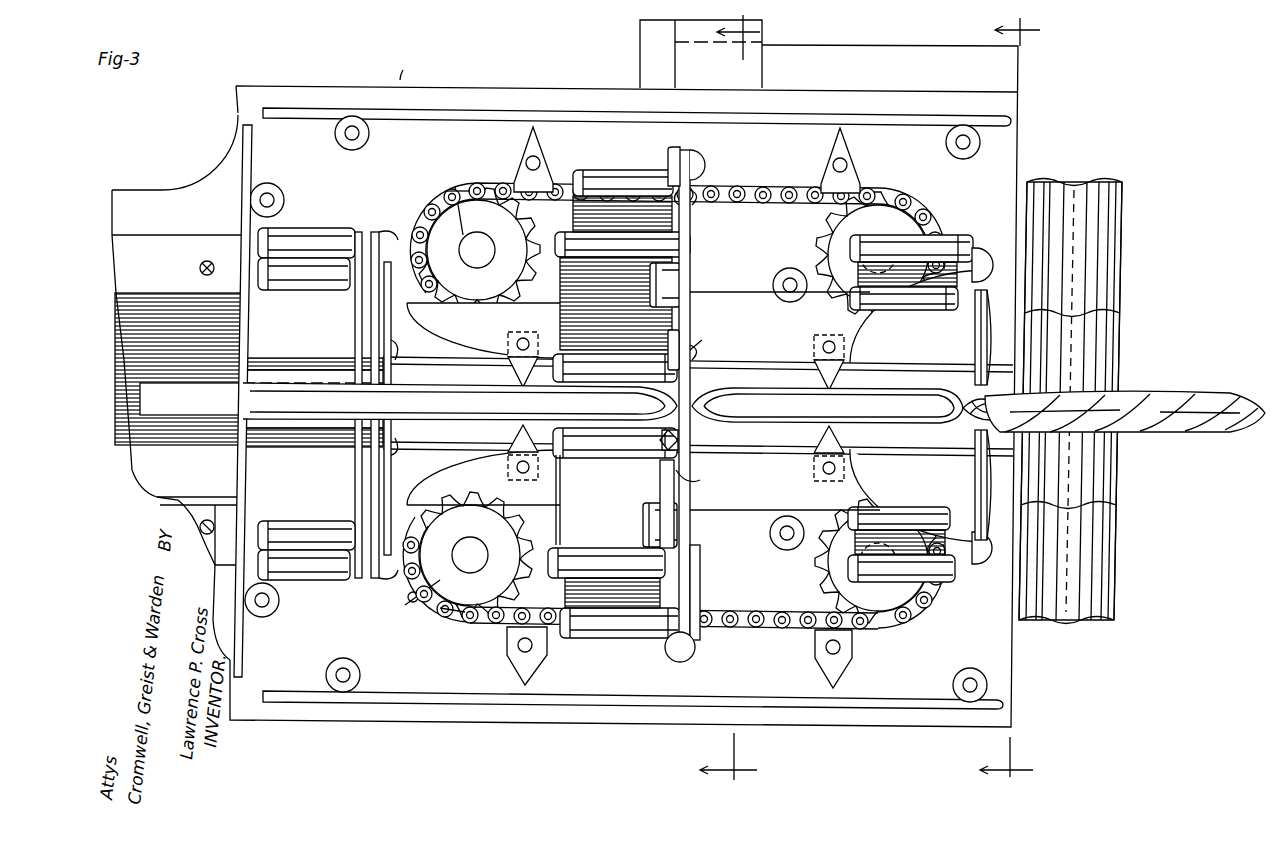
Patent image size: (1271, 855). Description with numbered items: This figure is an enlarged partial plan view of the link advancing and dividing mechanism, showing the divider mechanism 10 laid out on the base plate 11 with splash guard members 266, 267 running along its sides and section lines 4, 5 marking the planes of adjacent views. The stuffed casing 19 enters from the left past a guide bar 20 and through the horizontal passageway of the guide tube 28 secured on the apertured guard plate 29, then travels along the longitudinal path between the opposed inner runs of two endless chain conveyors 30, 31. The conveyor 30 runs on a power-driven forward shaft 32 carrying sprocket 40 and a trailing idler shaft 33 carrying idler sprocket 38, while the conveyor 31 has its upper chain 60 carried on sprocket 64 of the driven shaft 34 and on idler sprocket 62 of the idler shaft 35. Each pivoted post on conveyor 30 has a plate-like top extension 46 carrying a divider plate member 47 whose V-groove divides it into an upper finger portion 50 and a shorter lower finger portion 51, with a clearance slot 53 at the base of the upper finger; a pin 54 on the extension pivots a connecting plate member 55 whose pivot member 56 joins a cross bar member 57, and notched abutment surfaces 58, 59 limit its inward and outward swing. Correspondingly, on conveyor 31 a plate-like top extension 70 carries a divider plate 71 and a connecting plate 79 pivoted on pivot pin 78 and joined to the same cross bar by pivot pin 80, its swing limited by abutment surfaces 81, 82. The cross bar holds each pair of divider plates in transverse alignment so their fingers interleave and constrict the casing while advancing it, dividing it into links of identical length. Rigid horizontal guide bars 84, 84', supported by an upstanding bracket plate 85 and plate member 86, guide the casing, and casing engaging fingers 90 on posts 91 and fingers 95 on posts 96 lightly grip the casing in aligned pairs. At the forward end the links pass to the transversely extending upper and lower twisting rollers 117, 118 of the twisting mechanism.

The divider mechanism 10 is at (531, 88).
The base plate 11 is at (415, 88).
The stuffed casing 19 is at (178, 420).
The guide bar 20 is at (1114, 411).
The guide tube 28 is at (300, 440).
The guard plate 29 is at (249, 487).
The endless chain conveyor 30 is at (412, 616).
The endless chain conveyor 31 is at (434, 192).
The shaft 32 is at (898, 545).
The shaft 33 is at (498, 524).
The shaft 34 is at (898, 246).
The shaft 35 is at (472, 182).
The idler sprocket 38 is at (408, 598).
The sprocket 40 is at (460, 628).
The top extension 46 is at (696, 650).
The divider plate member 47 is at (660, 462).
The upper finger portion 50 is at (984, 466).
The lower finger portion 51 is at (977, 478).
The clearance slot 53 is at (984, 520).
The pin 54 is at (305, 524).
The connecting plate member 55 is at (566, 490).
The pivot member 56 is at (286, 576).
The cross bar member 57 is at (362, 330).
The vertical abutment surface 58 is at (680, 438).
The horizontal abutment surface 59 is at (690, 480).
The upper chain 60 is at (470, 180).
The idler sprocket 62 is at (483, 322).
The sprocket 64 is at (830, 248).
The plate-like top extension 70 is at (708, 166).
The divider plate 71 is at (692, 248).
The pivot pin 78 is at (300, 276).
The connecting plate 79 is at (575, 222).
The pivot pin 80 is at (316, 240).
The vertical abutment surface 81 is at (694, 198).
The horizontal abutment surface 82 is at (674, 160).
The guide bar 84 is at (918, 495).
The guide bar 84' is at (934, 352).
The bracket plate 85 is at (722, 508).
The upstanding plate member 86 is at (756, 306).
The casing engaging finger 90 is at (840, 440).
The post member 91 is at (532, 646).
The casing engaging finger 95 is at (538, 134).
The post 96 is at (541, 160).
The upper twisting roller 117 is at (1084, 190).
The lower twisting roller 118 is at (1098, 366).
The splash guard member 266 is at (443, 111).
The splash guard member 267 is at (550, 708).
The section line 4 is at (740, 398).
The section line 5 is at (1019, 400).